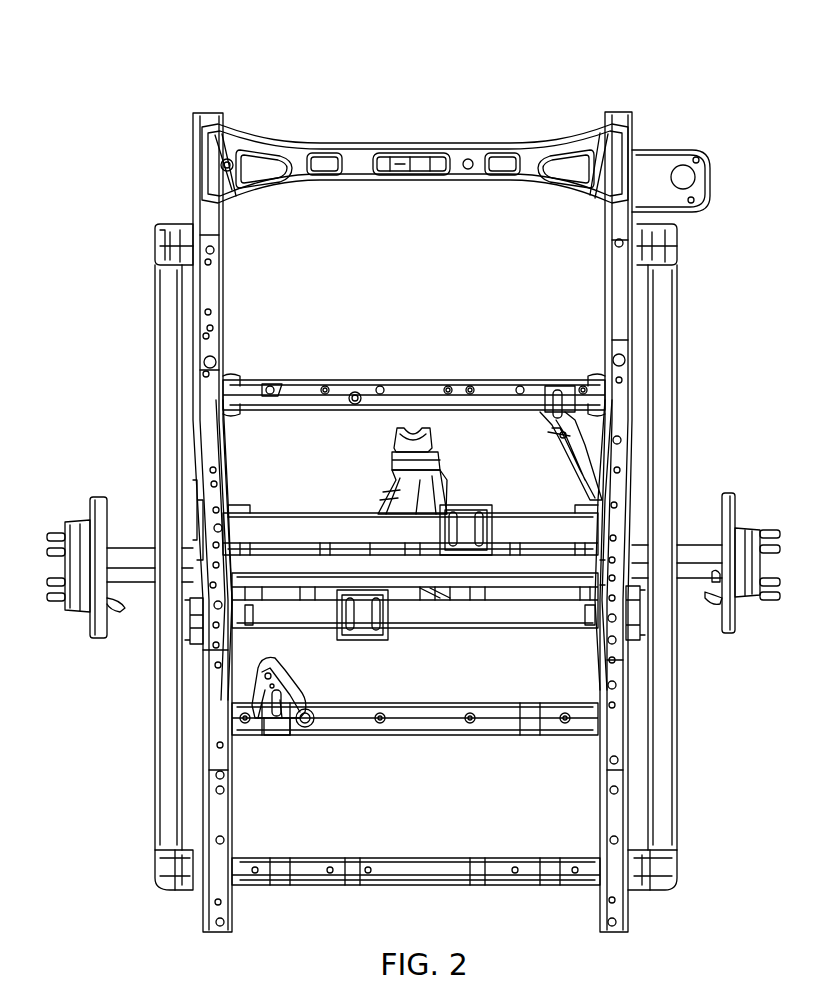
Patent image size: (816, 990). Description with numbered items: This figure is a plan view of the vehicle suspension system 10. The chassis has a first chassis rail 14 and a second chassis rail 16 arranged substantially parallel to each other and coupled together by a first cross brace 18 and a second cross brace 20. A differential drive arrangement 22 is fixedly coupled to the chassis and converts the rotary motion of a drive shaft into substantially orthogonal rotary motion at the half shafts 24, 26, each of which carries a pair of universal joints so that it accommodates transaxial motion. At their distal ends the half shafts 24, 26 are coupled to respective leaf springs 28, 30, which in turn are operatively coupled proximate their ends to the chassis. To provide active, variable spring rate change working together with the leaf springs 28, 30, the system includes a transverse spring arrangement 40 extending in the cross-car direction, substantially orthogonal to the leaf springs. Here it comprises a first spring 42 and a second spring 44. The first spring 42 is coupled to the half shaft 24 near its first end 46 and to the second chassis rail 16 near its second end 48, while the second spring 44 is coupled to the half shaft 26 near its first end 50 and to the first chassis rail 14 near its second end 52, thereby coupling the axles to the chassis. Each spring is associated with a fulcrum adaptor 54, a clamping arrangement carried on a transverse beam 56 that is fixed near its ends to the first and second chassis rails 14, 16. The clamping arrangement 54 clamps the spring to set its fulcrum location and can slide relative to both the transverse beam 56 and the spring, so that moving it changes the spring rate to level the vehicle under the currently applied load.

The vehicle suspension system 10 is at (722, 78).
The first chassis rail 14 is at (620, 395).
The second chassis rail 16 is at (208, 312).
The first cross brace 18 is at (430, 732).
The second cross brace 20 is at (410, 395).
The differential drive arrangement 22 is at (396, 498).
The half shaft 24 is at (685, 560).
The half shaft 26 is at (125, 563).
The leaf spring 28 is at (655, 410).
The leaf spring 30 is at (172, 450).
The transverse spring arrangement 40 is at (513, 490).
The first spring 42 is at (430, 622).
The second spring 44 is at (262, 520).
The first end of the first spring 46 is at (638, 612).
The second end of the first spring 48 is at (195, 616).
The first end of the second spring 50 is at (225, 530).
The second end of the second spring 52 is at (600, 500).
The fulcrum adaptor 54 is at (465, 555).
The transverse beam 56 is at (265, 575).